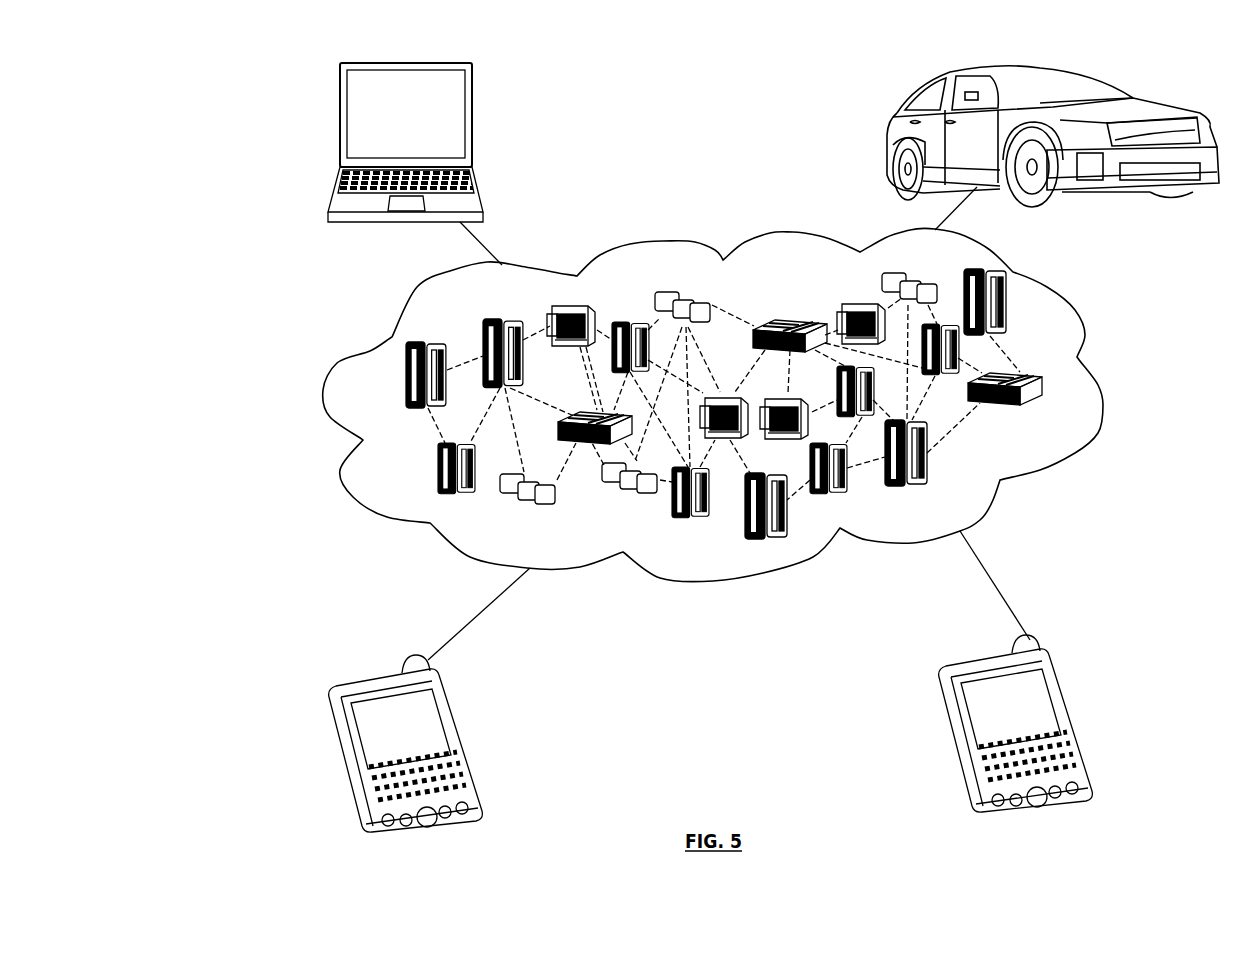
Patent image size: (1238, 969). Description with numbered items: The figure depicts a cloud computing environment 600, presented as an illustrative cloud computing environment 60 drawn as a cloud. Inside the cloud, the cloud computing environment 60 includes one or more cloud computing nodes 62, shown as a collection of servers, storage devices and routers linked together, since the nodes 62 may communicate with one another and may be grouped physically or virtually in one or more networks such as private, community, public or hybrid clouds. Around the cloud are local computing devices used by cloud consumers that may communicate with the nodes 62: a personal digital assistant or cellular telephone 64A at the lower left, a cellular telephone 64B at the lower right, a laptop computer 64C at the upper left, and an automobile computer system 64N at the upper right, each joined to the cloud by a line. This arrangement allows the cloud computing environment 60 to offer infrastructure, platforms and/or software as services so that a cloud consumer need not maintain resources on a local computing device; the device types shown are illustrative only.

The cloud computing environment 600 is at (245, 73).
The cloud computing environment 60 is at (1098, 384).
The cloud computing nodes 62 is at (1044, 412).
The personal digital assistant or cellular telephone 64A is at (527, 743).
The cellular telephone 64B is at (1072, 722).
The laptop computer 64C is at (538, 123).
The automobile computer system 64N is at (890, 140).